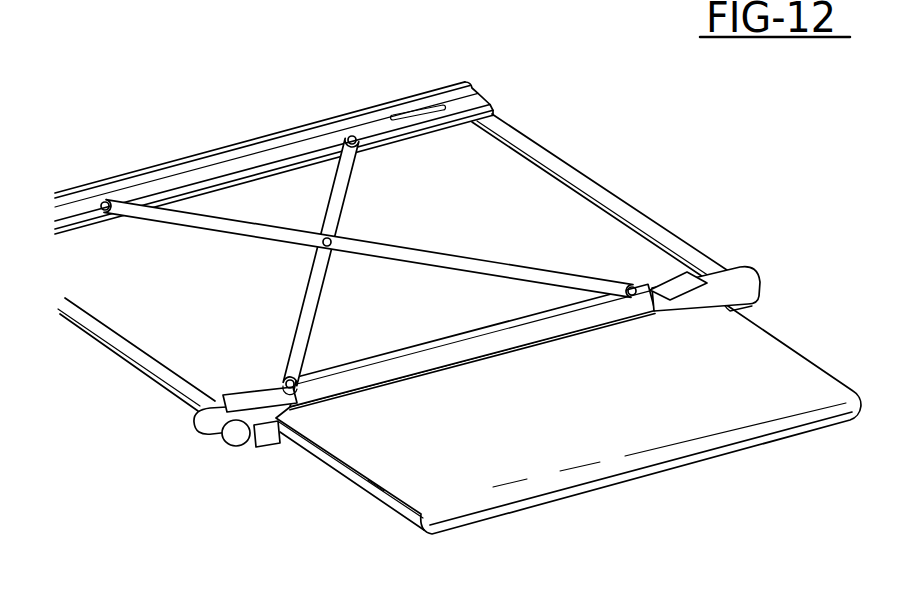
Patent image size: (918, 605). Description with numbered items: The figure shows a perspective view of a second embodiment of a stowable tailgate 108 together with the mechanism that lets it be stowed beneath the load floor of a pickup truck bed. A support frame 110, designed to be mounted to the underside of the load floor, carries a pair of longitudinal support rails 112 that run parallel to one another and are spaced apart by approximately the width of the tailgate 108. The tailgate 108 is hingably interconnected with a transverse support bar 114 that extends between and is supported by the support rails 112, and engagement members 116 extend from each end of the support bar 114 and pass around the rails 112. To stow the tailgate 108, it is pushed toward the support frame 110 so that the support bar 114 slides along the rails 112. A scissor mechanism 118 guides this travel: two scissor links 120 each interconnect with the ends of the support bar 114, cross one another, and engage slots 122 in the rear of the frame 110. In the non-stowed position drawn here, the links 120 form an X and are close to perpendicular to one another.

The stowable tailgate 108 is at (592, 414).
The support frame 110 is at (571, 153).
The longitudinal support rails 112 is at (637, 218).
The transverse support bar 114 is at (467, 349).
The engagement members 116 is at (723, 268).
The scissor mechanism 118 is at (380, 233).
The scissor links 120 is at (342, 178).
The slots 122 is at (395, 127).